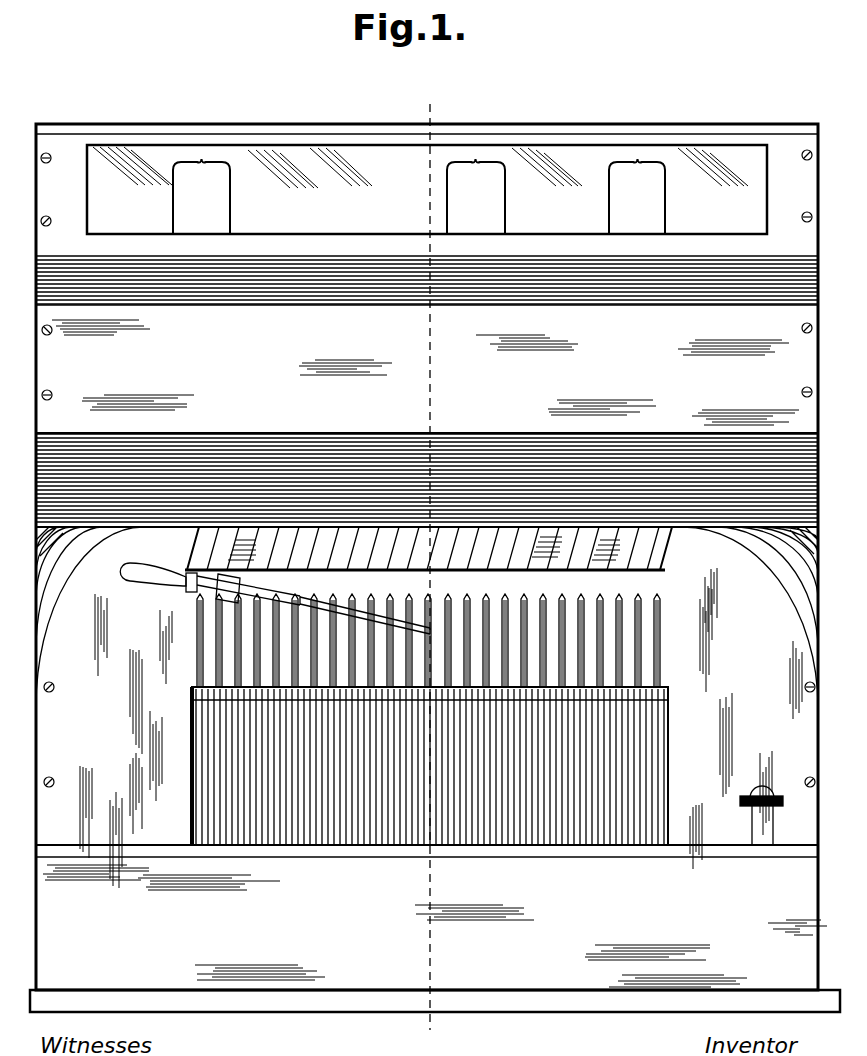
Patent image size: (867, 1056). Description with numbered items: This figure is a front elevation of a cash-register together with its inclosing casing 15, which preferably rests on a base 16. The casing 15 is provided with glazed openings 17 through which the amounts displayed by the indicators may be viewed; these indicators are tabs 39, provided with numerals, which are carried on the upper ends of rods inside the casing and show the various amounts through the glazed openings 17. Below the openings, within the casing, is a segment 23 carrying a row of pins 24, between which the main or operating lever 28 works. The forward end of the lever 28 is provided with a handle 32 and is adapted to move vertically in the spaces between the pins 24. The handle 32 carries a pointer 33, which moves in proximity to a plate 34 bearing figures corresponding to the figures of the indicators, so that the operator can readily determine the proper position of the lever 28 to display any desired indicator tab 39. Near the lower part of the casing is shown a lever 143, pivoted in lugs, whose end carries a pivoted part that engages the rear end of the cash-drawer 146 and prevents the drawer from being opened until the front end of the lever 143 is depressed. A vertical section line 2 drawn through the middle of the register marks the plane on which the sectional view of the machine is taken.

The section line 2 is at (430, 567).
The casing 15 is at (427, 557).
The base 16 is at (277, 998).
The glazed openings 17 is at (427, 189).
The segment 23 is at (192, 694).
The pins 24 is at (215, 662).
The main or operating lever 28 is at (310, 604).
The handle 32 is at (154, 578).
The pointer 33 is at (232, 577).
The plate 34 is at (640, 545).
The tabs 39 is at (173, 208).
The lever 143 is at (762, 786).
The cash-drawer 146 is at (431, 917).